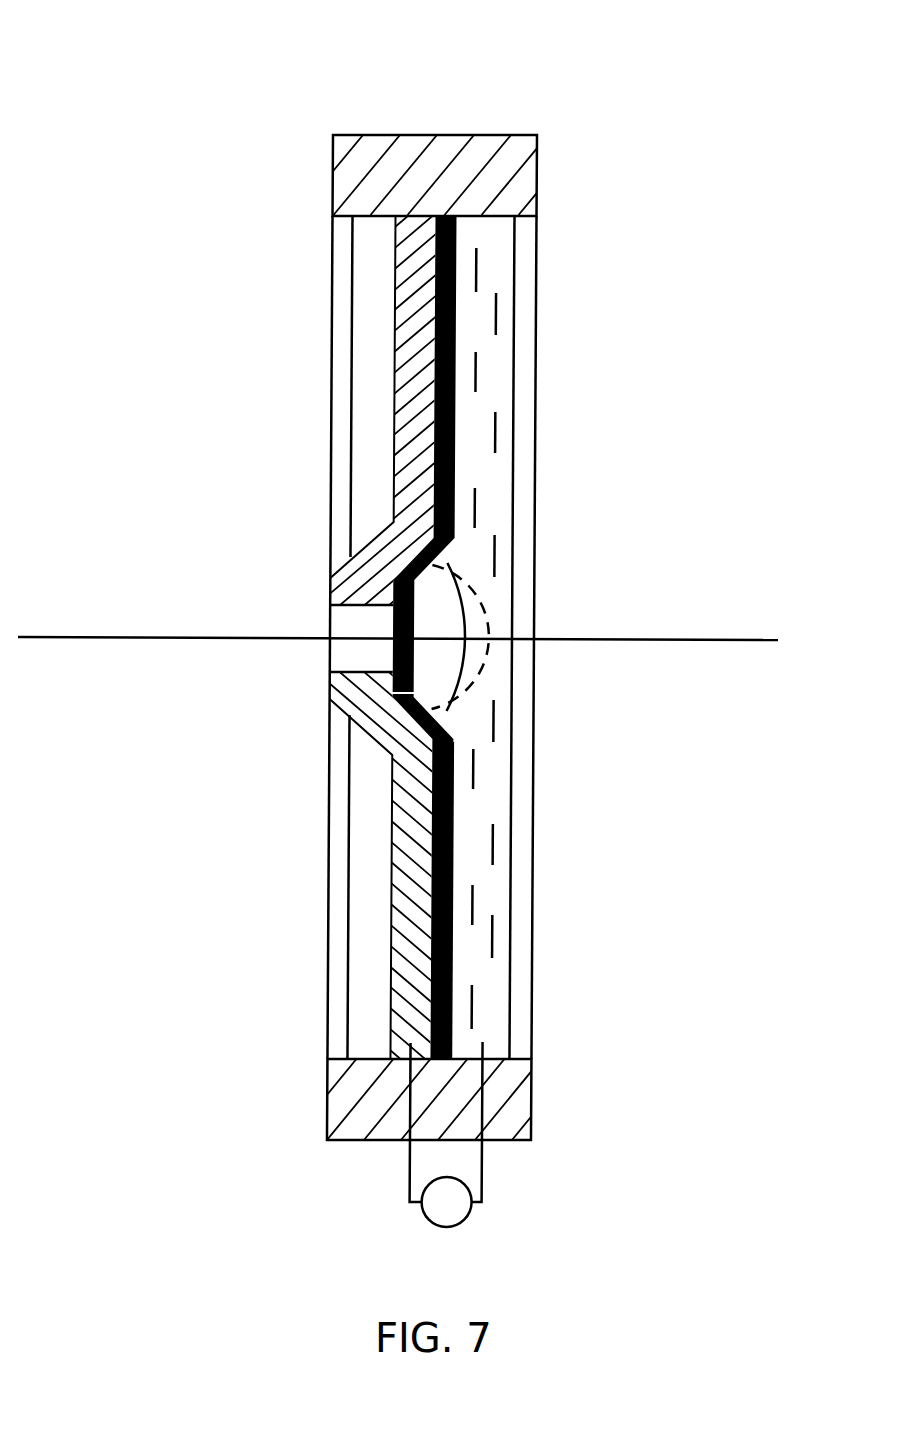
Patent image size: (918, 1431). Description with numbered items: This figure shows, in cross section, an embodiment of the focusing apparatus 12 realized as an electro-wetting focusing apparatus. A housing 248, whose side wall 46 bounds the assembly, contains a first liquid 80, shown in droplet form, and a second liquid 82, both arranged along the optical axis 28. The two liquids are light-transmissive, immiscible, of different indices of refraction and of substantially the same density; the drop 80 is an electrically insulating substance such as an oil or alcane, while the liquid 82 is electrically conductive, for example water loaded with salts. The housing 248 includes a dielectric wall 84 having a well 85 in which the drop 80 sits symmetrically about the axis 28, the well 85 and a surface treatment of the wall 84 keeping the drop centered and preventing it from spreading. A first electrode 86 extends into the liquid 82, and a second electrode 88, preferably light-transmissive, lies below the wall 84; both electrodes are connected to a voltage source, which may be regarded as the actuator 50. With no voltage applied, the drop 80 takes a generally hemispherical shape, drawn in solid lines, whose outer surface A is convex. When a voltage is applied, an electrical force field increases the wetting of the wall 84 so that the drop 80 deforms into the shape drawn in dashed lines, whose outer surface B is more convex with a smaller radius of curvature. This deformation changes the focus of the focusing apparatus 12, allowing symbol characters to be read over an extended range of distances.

The focusing apparatus 12 is at (258, 80).
The housing 248 is at (457, 135).
The housing wall 46 is at (540, 322).
The second electrode 88 is at (392, 852).
The first liquid 80 is at (430, 618).
The well 85 is at (443, 712).
The dielectric wall 84 is at (453, 863).
The second liquid 82 is at (493, 980).
The outer surface A is at (453, 563).
The outer surface B is at (493, 616).
The optical axis 28 is at (717, 638).
The first electrode 86 is at (483, 1046).
The actuator 50 is at (486, 1170).